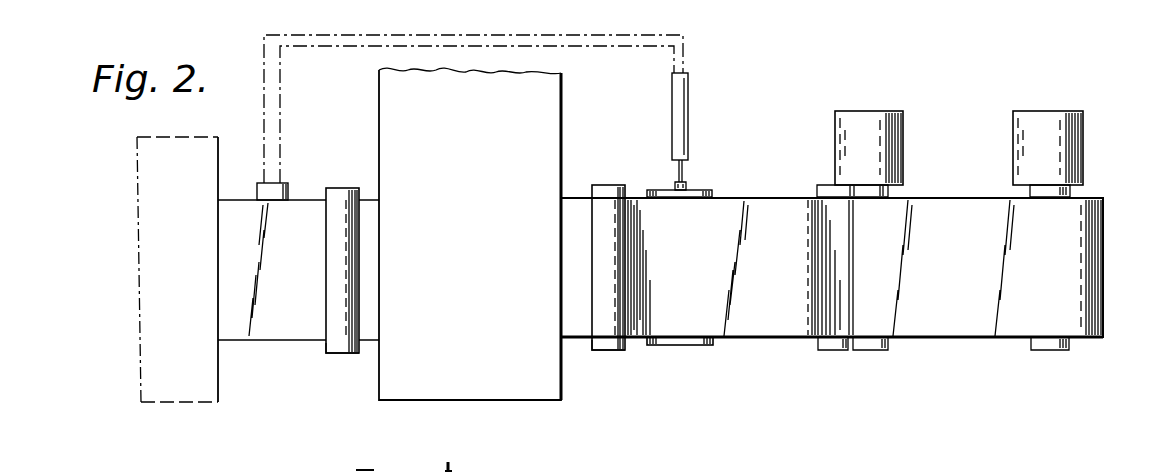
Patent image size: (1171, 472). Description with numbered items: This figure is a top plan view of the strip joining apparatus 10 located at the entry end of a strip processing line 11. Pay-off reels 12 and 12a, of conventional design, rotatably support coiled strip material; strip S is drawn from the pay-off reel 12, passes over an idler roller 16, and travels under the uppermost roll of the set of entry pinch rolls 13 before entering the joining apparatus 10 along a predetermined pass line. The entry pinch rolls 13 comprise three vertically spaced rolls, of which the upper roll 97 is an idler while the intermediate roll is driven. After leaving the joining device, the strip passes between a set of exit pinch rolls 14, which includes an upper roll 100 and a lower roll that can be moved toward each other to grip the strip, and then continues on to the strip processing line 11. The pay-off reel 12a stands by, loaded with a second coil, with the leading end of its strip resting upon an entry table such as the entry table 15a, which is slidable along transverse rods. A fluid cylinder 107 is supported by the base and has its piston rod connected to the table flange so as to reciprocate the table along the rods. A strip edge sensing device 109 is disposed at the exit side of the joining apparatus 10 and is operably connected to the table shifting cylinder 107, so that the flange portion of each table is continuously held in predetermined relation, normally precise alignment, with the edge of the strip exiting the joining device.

The strip joining apparatus 10 is at (589, 392).
The strip processing line 11 is at (230, 381).
The pay-off reel 12 is at (1068, 137).
The pay-off reel 12a is at (891, 134).
The entry pinch rolls 13 is at (609, 177).
The exit pinch rolls 14 is at (341, 176).
The entry table 15a is at (705, 182).
The idler roller 16 is at (836, 351).
The upper roll 97 is at (611, 346).
The upper roll 100 is at (342, 344).
The fluid cylinder 107 is at (681, 93).
The strip edge sensing device 109 is at (256, 192).
The strip material S is at (751, 206).